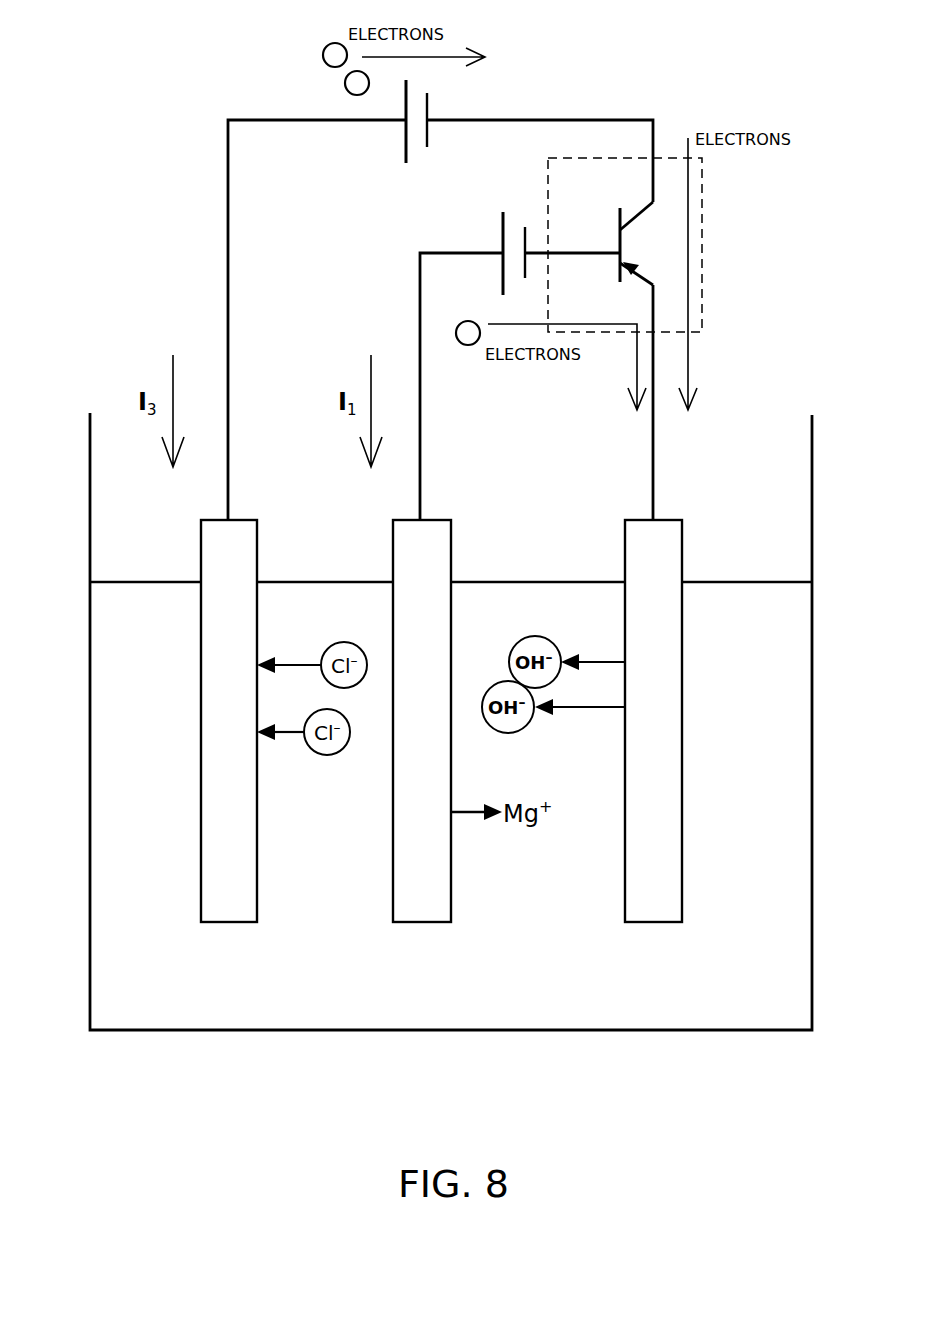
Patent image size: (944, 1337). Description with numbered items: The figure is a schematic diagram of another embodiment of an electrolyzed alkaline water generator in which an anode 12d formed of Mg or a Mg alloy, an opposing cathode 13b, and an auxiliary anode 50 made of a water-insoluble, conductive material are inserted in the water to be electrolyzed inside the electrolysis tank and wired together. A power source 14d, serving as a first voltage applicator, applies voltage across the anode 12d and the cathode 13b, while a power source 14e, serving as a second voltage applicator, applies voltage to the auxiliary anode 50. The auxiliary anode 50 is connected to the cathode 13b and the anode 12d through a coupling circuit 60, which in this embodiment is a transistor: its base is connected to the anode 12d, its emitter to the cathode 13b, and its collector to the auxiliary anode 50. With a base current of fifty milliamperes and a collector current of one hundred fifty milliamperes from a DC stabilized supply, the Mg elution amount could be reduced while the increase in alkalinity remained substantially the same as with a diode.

The power source 14e is at (428, 108).
The power source 14d is at (503, 290).
The coupling circuit 60 is at (702, 207).
The auxiliary anode 50 is at (227, 922).
The anode 12d is at (423, 922).
The cathode 13b is at (653, 922).